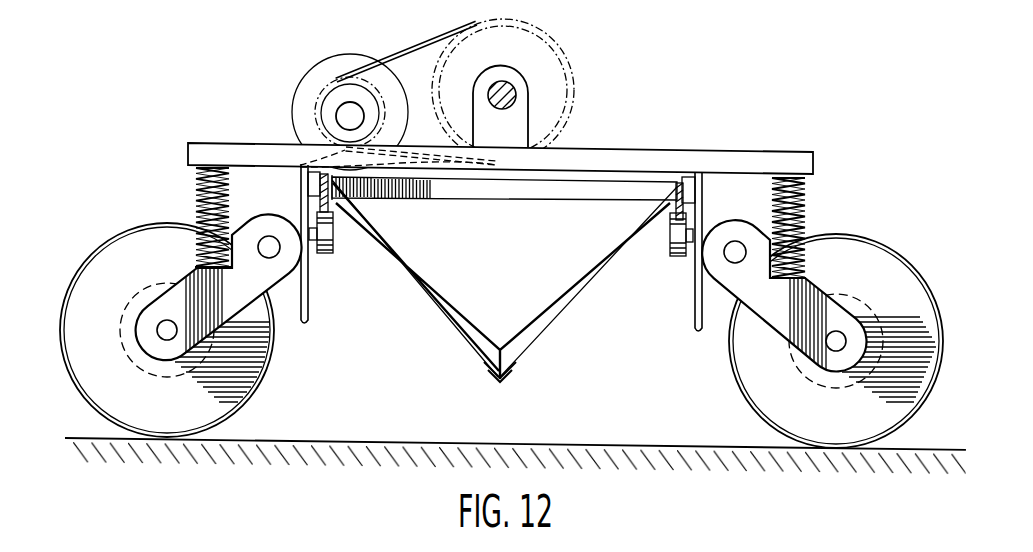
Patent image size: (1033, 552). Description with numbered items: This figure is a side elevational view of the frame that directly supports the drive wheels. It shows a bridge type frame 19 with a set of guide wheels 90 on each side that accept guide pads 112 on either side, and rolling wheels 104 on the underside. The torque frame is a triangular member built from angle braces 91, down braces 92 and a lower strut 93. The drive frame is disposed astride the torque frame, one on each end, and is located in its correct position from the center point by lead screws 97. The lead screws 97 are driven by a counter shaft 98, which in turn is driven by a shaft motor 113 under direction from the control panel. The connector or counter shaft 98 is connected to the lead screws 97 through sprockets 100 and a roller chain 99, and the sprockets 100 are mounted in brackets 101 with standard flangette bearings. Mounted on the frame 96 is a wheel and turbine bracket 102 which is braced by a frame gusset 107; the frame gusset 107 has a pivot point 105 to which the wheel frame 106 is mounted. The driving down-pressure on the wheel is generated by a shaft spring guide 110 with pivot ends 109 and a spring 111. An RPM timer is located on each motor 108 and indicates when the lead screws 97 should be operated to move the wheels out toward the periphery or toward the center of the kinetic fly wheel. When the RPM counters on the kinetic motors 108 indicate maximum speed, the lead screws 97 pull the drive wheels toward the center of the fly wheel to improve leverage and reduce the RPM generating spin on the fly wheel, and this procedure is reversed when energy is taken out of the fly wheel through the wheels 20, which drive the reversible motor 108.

The bridge type frame 19 is at (504, 280).
The wheels 20 is at (136, 227).
The guide wheels 90 is at (340, 252).
The angle braces 91 is at (446, 190).
The inclined frame member 92 is at (451, 303).
The lower strut 93 is at (512, 372).
The frame 96 is at (645, 150).
The lead screws 97 is at (507, 82).
The counter shaft 98 is at (338, 108).
The roller chain 99 is at (420, 48).
The sprockets 100 is at (346, 82).
The brackets 101 is at (481, 87).
The wheel and turbine bracket 102 is at (309, 318).
The rolling wheels 104 is at (326, 256).
The pivot point 105 is at (266, 238).
The wheel frame 106 is at (773, 313).
The frame gusset 107 is at (279, 323).
The motor 108 is at (160, 281).
The pivot ends 109 is at (214, 164).
The shaft spring guide 110 is at (199, 236).
The spring 111 is at (197, 190).
The guide pads 112 is at (310, 181).
The shaft motor 113 is at (322, 62).